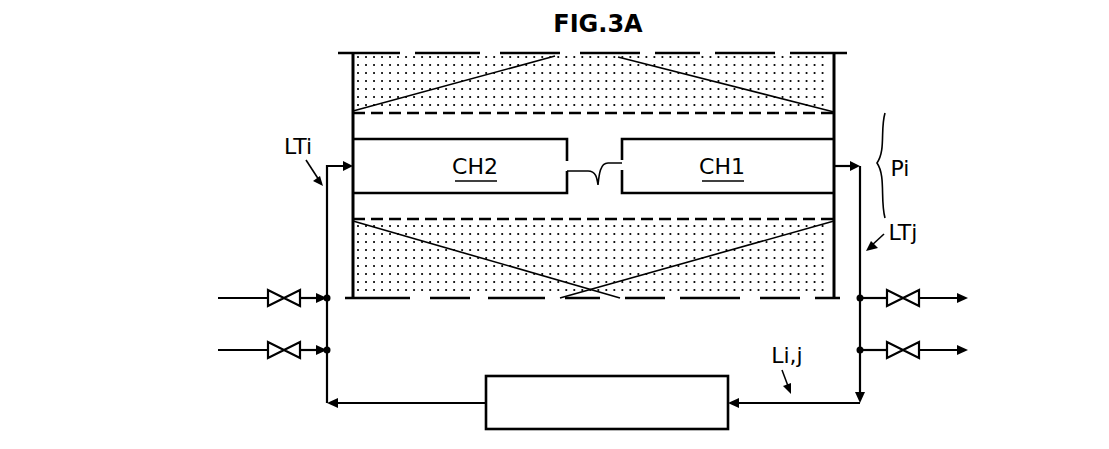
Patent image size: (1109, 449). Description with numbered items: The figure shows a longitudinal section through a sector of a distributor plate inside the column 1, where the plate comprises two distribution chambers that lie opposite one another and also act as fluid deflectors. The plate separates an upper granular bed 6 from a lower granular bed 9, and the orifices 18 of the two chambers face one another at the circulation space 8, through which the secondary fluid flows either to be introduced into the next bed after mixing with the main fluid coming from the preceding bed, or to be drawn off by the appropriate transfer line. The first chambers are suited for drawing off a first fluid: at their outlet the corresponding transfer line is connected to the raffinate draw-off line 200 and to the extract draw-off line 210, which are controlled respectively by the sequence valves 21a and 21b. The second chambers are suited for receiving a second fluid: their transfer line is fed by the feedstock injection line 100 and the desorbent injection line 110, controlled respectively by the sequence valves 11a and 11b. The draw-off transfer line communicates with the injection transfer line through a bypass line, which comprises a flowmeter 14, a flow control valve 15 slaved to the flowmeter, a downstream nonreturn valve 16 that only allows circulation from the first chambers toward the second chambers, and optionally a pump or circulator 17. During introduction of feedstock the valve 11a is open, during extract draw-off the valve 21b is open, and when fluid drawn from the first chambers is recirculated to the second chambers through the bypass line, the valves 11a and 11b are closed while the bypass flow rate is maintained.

The column 1 is at (320, 97).
The bed 6 is at (812, 112).
The circulation space 8 is at (586, 124).
The bed 9 is at (772, 221).
The orifices 18 is at (594, 189).
The flowmeter 14 is at (607, 402).
The flow control valve 15 is at (559, 404).
The nonreturn valve 16 is at (602, 404).
The pump or circulator 17 is at (643, 404).
The feedstock injection line 100 is at (242, 297).
The desorbent injection line 110 is at (243, 352).
The sequence valve 11a is at (301, 296).
The sequence valve 11b is at (300, 352).
The sequence valve 21a is at (890, 294).
The sequence valve 21b is at (892, 355).
The raffinate draw-off line 200 is at (940, 294).
The extract draw-off line 210 is at (941, 355).